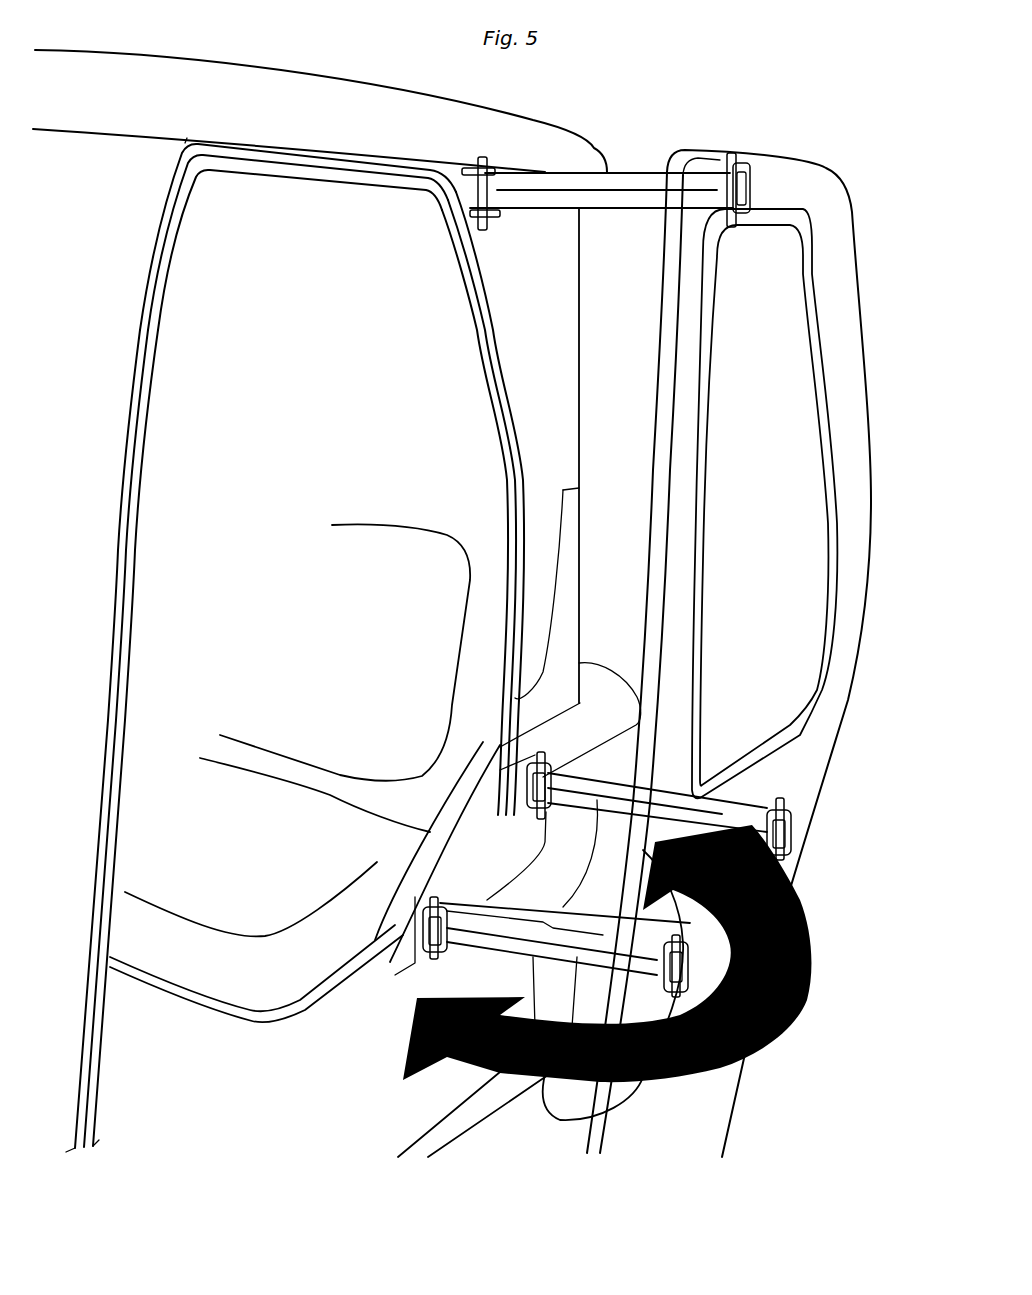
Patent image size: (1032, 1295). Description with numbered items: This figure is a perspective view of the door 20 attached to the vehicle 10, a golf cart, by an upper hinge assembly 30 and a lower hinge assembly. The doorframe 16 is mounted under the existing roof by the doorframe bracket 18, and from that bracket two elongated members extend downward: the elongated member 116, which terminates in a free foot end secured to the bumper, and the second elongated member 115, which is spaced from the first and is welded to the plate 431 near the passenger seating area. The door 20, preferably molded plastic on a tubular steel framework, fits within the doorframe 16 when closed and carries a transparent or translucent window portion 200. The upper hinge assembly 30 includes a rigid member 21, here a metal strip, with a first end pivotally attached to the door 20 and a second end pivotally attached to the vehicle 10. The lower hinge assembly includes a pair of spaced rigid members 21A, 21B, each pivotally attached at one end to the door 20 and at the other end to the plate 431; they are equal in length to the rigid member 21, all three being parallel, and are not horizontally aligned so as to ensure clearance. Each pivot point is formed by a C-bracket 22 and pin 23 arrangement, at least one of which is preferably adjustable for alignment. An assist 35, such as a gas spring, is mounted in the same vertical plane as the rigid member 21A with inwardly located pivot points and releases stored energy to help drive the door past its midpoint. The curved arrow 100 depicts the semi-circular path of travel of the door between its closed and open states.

The vehicle 10 is at (309, 54).
The doorframe 16 is at (308, 645).
The doorframe bracket 18 is at (184, 147).
The door 20 is at (756, 653).
The rigid member 21 is at (640, 172).
The rigid member 21A is at (565, 927).
The rigid member 21B is at (582, 806).
The C-bracket 22 is at (496, 220).
The pin 23 is at (483, 160).
The upper hinge assembly 30 is at (613, 236).
The assist 35 is at (525, 912).
The arrow 100 is at (812, 958).
The second elongated member 115 is at (511, 414).
The elongated member 116 is at (133, 480).
The window portion 200 is at (829, 520).
The plate 431 is at (500, 856).